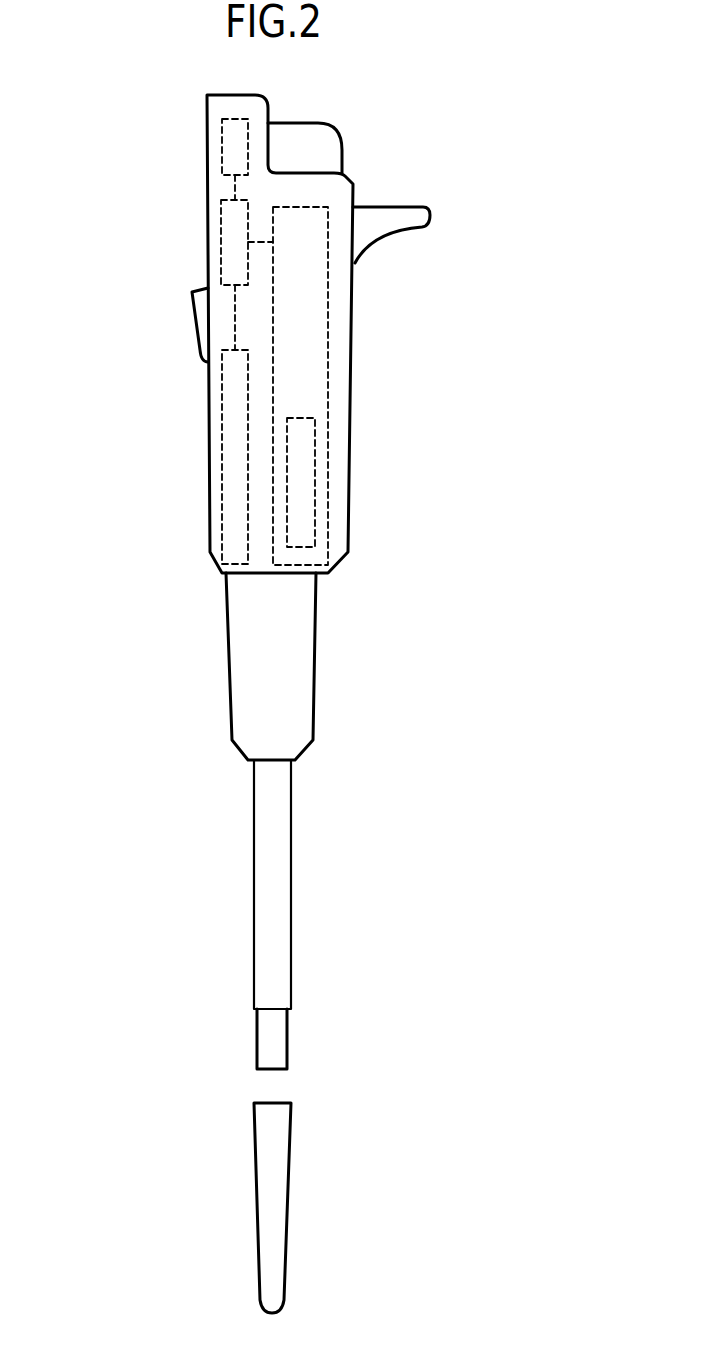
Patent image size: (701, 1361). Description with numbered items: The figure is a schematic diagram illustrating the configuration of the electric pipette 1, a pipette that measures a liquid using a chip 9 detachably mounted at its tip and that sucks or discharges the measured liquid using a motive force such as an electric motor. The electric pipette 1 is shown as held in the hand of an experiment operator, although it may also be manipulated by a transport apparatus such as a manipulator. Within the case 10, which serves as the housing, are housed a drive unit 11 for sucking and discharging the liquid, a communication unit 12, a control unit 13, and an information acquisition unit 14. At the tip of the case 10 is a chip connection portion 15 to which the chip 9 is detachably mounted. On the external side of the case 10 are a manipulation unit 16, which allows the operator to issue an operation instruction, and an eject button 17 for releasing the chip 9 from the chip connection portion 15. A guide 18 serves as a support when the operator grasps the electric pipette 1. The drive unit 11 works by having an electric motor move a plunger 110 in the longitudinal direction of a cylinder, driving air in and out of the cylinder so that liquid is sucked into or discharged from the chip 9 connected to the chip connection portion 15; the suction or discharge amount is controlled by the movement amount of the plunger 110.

The electric pipette 1 is at (80, 980).
The chip 9 is at (292, 1153).
The case 10 is at (218, 563).
The drive unit 11 is at (330, 318).
The communication unit 12 is at (210, 148).
The control unit 13 is at (210, 251).
The information acquisition unit 14 is at (210, 516).
The chip connection portion 15 is at (288, 1040).
The manipulation unit 16 is at (198, 331).
The eject button 17 is at (336, 155).
The guide 18 is at (413, 207).
The plunger 110 is at (315, 518).